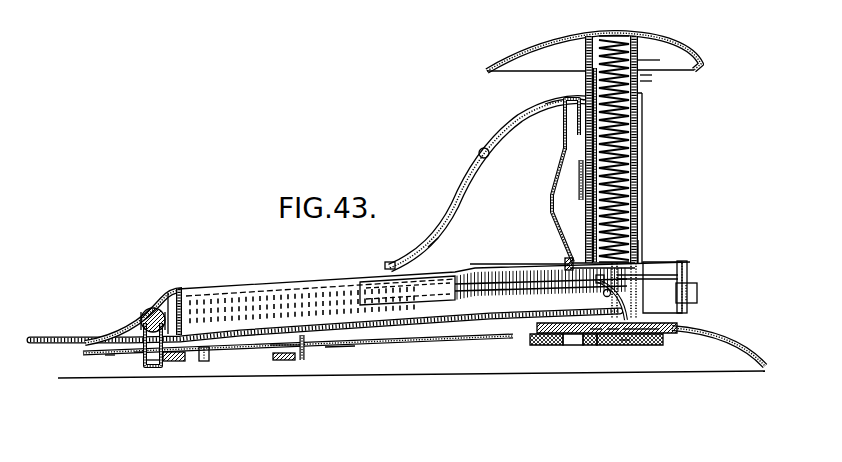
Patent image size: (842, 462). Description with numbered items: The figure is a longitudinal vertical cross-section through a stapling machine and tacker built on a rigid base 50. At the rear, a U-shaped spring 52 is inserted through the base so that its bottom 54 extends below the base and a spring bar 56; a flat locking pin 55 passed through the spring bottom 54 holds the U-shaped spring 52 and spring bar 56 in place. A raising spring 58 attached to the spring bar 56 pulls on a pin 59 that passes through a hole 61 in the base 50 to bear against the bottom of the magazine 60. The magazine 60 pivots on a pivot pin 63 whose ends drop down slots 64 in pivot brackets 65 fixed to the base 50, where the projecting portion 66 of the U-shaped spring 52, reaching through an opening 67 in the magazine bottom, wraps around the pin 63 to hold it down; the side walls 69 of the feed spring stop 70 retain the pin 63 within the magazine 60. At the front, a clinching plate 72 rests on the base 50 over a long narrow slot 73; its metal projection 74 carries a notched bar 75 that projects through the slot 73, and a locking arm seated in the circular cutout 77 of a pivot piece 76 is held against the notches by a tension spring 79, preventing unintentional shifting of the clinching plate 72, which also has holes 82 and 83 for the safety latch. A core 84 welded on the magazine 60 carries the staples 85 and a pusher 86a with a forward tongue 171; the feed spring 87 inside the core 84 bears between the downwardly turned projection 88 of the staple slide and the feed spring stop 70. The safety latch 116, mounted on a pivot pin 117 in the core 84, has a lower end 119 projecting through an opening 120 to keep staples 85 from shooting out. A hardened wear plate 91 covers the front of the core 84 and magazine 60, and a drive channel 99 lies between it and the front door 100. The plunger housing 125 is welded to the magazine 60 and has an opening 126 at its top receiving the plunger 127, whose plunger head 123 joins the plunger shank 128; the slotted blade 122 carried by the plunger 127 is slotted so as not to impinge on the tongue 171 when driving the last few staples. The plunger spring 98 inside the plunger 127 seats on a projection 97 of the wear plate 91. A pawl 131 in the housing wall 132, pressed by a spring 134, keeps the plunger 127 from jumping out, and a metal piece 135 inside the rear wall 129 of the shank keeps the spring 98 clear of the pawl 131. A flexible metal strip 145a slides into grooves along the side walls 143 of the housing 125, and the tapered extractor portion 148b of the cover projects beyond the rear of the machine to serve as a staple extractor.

The base 50 is at (62, 378).
The U-shaped spring 52 is at (112, 355).
The bottom of U-shaped spring 54 is at (150, 368).
The flat locking pin 55 is at (163, 366).
The spring bar 56 is at (140, 356).
The raising spring 58 is at (180, 362).
The pin 59 is at (278, 357).
The magazine 60 is at (83, 352).
The hole in base 61 is at (320, 357).
The pivot pin 63 is at (153, 307).
The slots of pivot brackets 64 is at (148, 306).
The pivot brackets 65 is at (340, 348).
The projecting portion of U-shaped spring 66 is at (140, 316).
The opening in magazine bottom 67 is at (203, 362).
The side walls of feed spring stop 69 is at (170, 300).
The feed spring stop 70 is at (188, 290).
The clinching plate 72 is at (670, 326).
The slot in base 73 is at (667, 330).
The metal projection of clinching plate 74 is at (640, 330).
The notched bar 75 is at (652, 330).
The pivot piece 76 is at (553, 335).
The circular cutout 77 is at (566, 335).
The tension spring 79 is at (582, 335).
The hole in clinching plate 82 is at (628, 330).
The hole in clinching plate 83 is at (598, 335).
The core 84 is at (463, 318).
The staples 85 is at (485, 270).
The pusher 86a is at (390, 265).
The feed spring 87 is at (240, 290).
The downwardly turned projection of staple slide 88 is at (430, 296).
The wear plate 91 is at (565, 260).
The projection on wear plate 97 is at (633, 250).
The plunger spring 98 is at (598, 37).
The drive channel 99 is at (650, 263).
The front door 100 is at (695, 267).
The safety latch 116 is at (612, 335).
The pivot pin of safety latch 117 is at (538, 332).
The lower end of safety latch 119 is at (625, 340).
The opening in core and magazine bottom 120 is at (665, 313).
The housing wall 122 is at (643, 172).
The plunger head 123 is at (668, 43).
The plunger housing 125 is at (652, 130).
The opening in housing top 126 is at (652, 81).
The plunger 127 is at (652, 75).
The plunger shank 128 is at (660, 60).
The rear wall of plunger shank 129 is at (590, 76).
The pawl 131 is at (577, 138).
The wall of plunger housing 132 is at (578, 215).
The pawl spring 134 is at (556, 180).
The metal piece 135 is at (586, 63).
The side walls of plunger housing 143 is at (503, 147).
The flexible metal strip 145a is at (479, 151).
The extractor portion of cover 148b is at (53, 328).
The tongue 171 is at (433, 253).